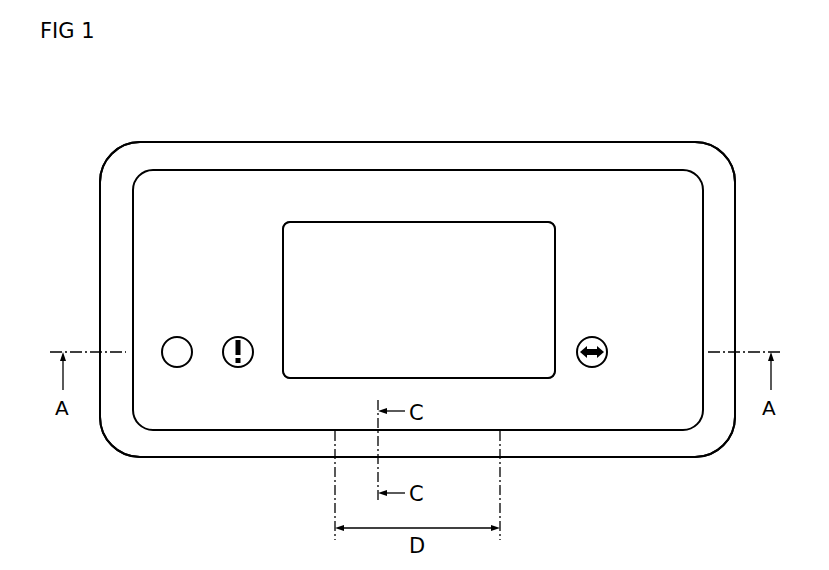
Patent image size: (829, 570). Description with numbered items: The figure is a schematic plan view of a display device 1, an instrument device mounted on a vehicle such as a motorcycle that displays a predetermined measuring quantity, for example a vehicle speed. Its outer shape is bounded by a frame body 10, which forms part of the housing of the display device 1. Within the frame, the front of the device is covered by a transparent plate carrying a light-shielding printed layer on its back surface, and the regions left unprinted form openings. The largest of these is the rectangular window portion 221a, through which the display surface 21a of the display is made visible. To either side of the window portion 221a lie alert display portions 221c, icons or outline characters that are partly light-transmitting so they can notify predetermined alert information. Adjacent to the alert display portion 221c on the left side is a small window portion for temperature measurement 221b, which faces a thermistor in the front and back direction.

The display device 1 is at (687, 113).
The frame body 10 is at (205, 156).
The display surface 21a is at (415, 252).
The window portion 221a is at (546, 262).
The window portion for temperature measurement 221b is at (172, 356).
The alert display portion 221c is at (240, 370).